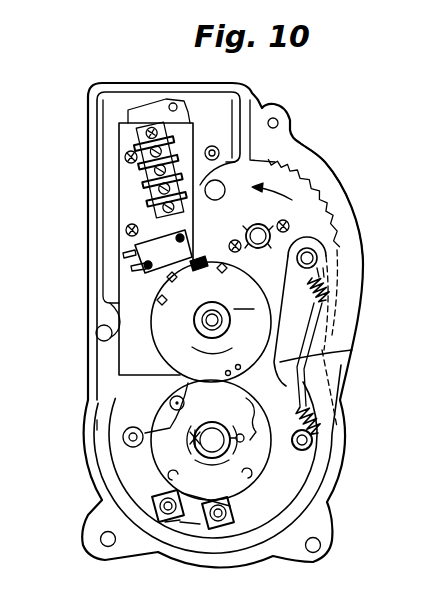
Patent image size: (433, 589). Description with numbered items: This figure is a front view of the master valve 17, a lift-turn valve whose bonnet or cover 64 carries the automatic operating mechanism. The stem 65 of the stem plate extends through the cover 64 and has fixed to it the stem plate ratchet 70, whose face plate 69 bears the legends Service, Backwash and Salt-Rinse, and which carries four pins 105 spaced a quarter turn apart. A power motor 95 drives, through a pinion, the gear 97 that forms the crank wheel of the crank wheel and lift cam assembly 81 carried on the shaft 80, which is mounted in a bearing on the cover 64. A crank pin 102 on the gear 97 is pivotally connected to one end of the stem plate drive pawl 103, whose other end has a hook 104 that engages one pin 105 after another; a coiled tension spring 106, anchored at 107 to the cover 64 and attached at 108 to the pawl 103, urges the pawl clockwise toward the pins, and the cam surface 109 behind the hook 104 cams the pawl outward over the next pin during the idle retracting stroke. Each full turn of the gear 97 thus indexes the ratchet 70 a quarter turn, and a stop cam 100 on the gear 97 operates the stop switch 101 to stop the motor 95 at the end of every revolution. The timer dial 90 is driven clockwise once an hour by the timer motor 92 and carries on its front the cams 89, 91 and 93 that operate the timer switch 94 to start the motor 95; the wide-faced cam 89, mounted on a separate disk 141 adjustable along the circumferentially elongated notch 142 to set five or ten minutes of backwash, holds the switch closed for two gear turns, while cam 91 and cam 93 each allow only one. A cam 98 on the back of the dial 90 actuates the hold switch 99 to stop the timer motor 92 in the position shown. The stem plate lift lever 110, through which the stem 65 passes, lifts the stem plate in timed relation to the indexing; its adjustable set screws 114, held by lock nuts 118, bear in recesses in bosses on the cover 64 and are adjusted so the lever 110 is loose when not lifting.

The master valve 17 is at (360, 268).
The bonnet or cover 64 is at (361, 204).
The stem 65 is at (204, 445).
The face plate 69 is at (170, 399).
The stem plate ratchet 70 is at (152, 415).
The shaft 80 is at (258, 228).
The crank wheel and lift cam assembly 81 is at (306, 199).
The cam 89 is at (177, 300).
The timer dial 90 is at (163, 357).
The cam 91 is at (157, 300).
The timer motor 92 is at (110, 316).
The cam 93 is at (226, 272).
The timer switch 94 is at (199, 245).
The power motor 95 is at (150, 103).
The gear 97 is at (284, 171).
The cam 98 is at (200, 262).
The hold switch 99 is at (150, 234).
The stop cam 100 is at (264, 185).
The stop switch 101 is at (200, 183).
The crank pin 102 is at (313, 246).
The stem plate drive pawl 103 is at (352, 350).
The hook 104 is at (258, 396).
The pins 105 is at (118, 390).
The coiled tension spring 106 is at (333, 291).
The spring anchor 107 is at (313, 441).
The spring attachment 108 is at (318, 244).
The cam surface 109 is at (209, 322).
The stem plate lift lever 110 is at (190, 522).
The adjustable set screws 114 is at (158, 495).
The lock nuts 118 is at (168, 522).
The disk 141 is at (243, 302).
The circumferentially elongated notch 142 is at (240, 250).